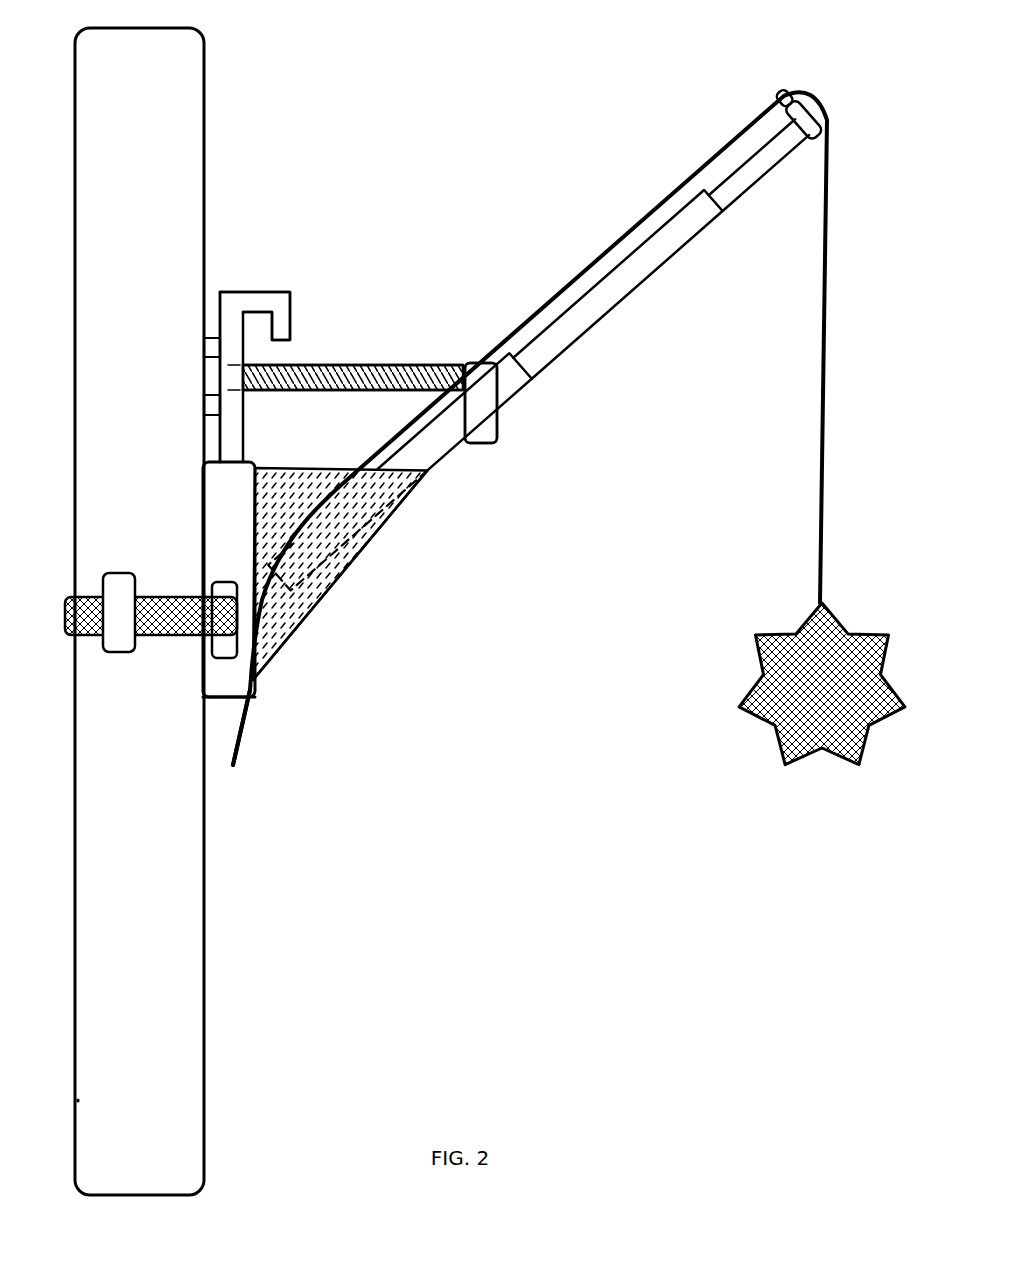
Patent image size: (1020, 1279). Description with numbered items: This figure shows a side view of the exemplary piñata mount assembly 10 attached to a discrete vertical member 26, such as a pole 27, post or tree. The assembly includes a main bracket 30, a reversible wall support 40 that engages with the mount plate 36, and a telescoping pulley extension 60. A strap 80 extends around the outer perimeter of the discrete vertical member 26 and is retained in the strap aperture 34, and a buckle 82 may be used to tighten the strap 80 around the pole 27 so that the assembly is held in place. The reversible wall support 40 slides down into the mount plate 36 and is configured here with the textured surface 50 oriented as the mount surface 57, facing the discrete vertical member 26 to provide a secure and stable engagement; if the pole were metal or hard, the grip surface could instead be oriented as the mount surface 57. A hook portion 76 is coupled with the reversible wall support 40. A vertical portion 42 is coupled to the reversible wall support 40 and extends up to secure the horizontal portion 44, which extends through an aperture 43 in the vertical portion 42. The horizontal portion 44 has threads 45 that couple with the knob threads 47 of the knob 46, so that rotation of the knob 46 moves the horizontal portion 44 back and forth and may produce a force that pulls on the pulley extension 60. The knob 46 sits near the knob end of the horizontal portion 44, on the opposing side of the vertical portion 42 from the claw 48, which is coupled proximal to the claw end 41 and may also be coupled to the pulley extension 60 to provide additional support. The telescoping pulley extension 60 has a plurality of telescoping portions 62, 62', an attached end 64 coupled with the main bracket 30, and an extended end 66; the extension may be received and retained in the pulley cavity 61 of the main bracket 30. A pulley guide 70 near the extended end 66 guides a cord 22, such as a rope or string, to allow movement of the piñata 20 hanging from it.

The piñata mount assembly 10 is at (450, 248).
The piñata 20 is at (760, 632).
The cord 22 is at (822, 440).
The discrete vertical member 26 is at (205, 935).
The pole 27 is at (183, 1020).
The main bracket 30 is at (347, 580).
The strap aperture 34 is at (258, 693).
The mount plate 36 is at (212, 695).
The reversible wall support 40 is at (232, 292).
The claw end 41 is at (466, 365).
The vertical portion 42 is at (234, 425).
The aperture 43 is at (290, 390).
The horizontal portion 44 is at (410, 365).
The threads 45 is at (345, 365).
The knob 46 is at (210, 345).
The knob threads 47 is at (210, 402).
The claw 48 is at (485, 400).
The textured surface 50 is at (202, 487).
The mount surface 57 is at (200, 666).
The telescoping pulley extension 60 is at (598, 295).
The pulley cavity 61 is at (383, 533).
The telescoping portion 62 is at (617, 284).
The telescoping portion 62' is at (759, 204).
The attached end 64 is at (420, 475).
The extended end 66 is at (810, 142).
The pulley guide 70 is at (781, 90).
The hook portion 76 is at (272, 298).
The strap 80 is at (215, 582).
The buckle 82 is at (120, 573).